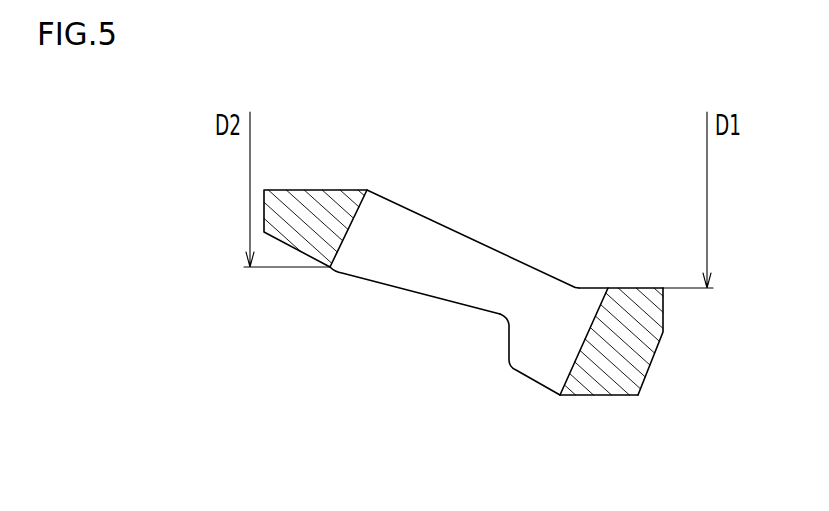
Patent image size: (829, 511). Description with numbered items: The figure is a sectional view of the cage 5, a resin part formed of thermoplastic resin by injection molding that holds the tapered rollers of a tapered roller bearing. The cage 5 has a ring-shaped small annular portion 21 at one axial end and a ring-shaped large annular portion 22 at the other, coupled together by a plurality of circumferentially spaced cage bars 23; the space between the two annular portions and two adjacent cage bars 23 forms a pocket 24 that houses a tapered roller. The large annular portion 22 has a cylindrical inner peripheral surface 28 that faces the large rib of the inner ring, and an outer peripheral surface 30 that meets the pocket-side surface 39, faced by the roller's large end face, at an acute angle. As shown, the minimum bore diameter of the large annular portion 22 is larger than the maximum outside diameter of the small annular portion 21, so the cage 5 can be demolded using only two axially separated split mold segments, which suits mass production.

The cage 5 is at (589, 407).
The small annular portion 21 is at (318, 200).
The large annular portion 22 is at (637, 353).
The cage bar 23 is at (438, 303).
The pocket 24 is at (419, 294).
The inner peripheral surface 28 is at (632, 288).
The outer peripheral surface 30 is at (613, 397).
The pocket-side surface 39 is at (576, 357).